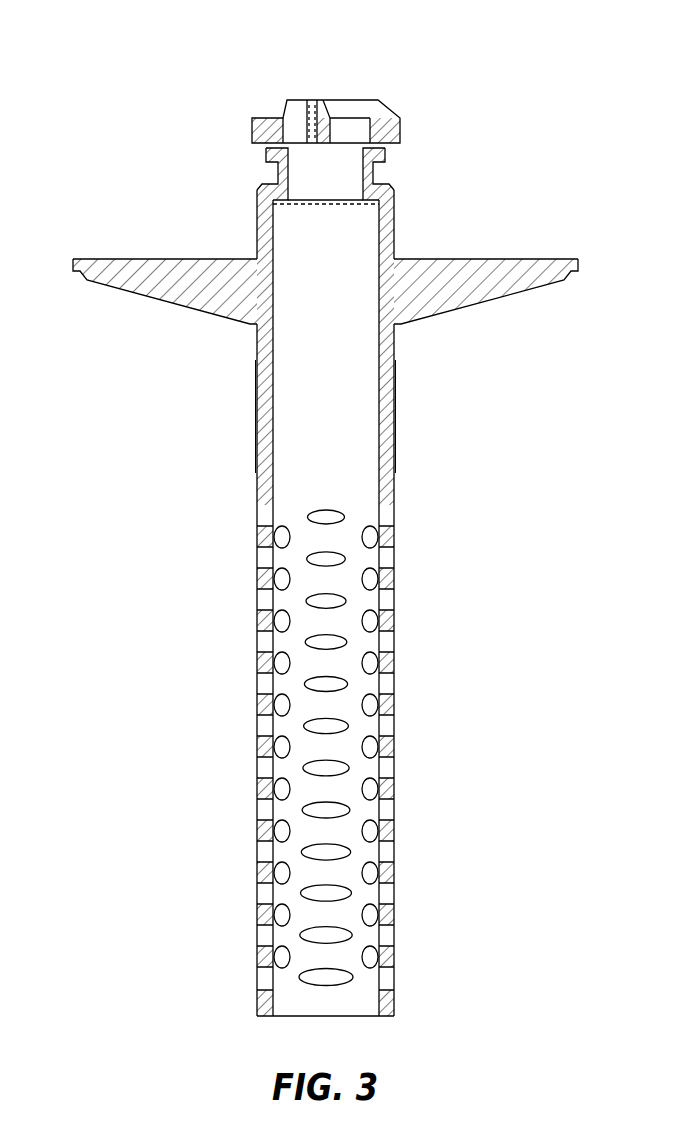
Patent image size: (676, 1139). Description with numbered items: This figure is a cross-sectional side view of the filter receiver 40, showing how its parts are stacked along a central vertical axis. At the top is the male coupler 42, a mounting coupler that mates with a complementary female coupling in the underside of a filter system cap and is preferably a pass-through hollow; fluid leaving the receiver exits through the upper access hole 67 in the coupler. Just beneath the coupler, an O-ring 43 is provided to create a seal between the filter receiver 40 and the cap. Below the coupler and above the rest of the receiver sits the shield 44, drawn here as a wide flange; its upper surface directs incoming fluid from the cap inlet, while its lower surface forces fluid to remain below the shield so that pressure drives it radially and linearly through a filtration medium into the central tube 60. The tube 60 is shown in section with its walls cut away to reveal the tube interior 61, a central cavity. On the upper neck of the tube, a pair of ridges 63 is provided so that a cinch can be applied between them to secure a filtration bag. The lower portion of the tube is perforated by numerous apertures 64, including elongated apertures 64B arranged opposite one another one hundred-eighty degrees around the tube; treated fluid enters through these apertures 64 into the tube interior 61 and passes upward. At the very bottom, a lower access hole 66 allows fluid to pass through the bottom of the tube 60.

The filter receiver 40 is at (120, 118).
The male coupler 42 is at (405, 135).
The O-ring 43 is at (378, 172).
The shield 44 is at (530, 259).
The tube 60 is at (440, 507).
The tube interior 61 is at (312, 395).
The ridges 63 is at (255, 360).
The apertures 64 is at (257, 683).
The elongated apertures 64B is at (345, 517).
The lower access hole 66 is at (362, 1017).
The upper access hole 67 is at (340, 100).